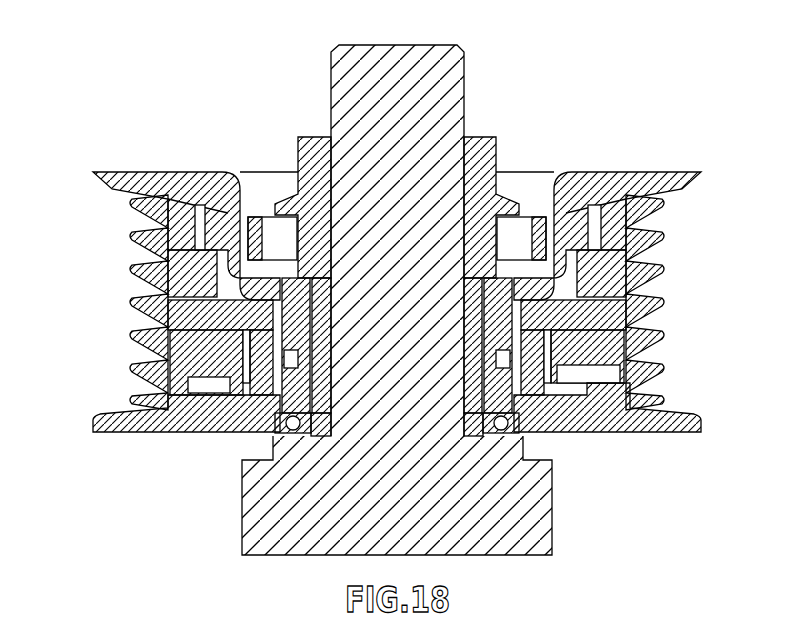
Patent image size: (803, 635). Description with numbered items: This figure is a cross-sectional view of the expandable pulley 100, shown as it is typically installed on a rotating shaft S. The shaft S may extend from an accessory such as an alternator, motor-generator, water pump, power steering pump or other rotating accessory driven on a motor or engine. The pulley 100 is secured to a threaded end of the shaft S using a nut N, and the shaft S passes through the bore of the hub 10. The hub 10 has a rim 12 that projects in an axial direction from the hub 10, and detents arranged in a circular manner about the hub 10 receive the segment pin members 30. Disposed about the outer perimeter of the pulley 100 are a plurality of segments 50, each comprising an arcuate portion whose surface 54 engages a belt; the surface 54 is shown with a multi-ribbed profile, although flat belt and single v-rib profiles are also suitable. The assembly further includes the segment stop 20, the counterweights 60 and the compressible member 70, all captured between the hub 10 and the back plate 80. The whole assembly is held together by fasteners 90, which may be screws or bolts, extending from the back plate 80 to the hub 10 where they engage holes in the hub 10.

The expandable pulley 100 is at (388, 293).
The hub 10 is at (190, 173).
The rim 12 is at (300, 287).
The segment stop 20 is at (180, 312).
The segment pin member 30 is at (600, 232).
The segment 50 is at (130, 290).
The surface 54 is at (660, 317).
The counterweight 60 is at (200, 350).
The compressible member 70 is at (213, 395).
The back plate 80 is at (652, 427).
The fastener 90 is at (280, 412).
The nut N is at (475, 137).
The shaft S is at (280, 500).